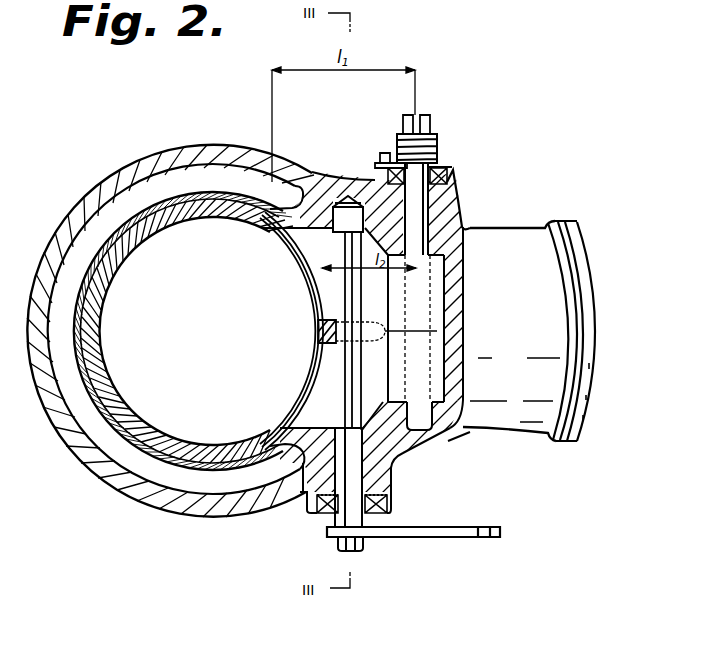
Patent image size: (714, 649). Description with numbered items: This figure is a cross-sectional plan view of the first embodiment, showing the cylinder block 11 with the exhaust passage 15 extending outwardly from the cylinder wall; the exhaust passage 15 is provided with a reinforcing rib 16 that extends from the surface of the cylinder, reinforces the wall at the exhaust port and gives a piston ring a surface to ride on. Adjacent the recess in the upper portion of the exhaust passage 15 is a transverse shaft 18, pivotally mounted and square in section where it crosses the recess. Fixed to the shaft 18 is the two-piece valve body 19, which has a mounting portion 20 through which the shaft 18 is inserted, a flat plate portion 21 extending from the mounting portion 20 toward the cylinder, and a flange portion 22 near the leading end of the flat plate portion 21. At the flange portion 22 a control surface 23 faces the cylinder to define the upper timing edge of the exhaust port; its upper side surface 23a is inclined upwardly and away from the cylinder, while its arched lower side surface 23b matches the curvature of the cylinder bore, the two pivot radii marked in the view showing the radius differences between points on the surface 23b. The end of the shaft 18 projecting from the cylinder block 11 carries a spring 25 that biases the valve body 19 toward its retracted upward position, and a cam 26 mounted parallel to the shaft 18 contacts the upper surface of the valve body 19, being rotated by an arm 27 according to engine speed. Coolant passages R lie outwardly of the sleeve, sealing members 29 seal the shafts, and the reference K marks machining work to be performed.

The cylinder block 11 is at (200, 147).
The coolant passages R is at (205, 500).
The exhaust passage 15 is at (573, 262).
The reinforcing rib 16 is at (318, 333).
The transverse shaft 18 is at (451, 180).
The valve body 19 is at (268, 423).
The mounting portion 20 is at (433, 367).
The flat plate portion 21 is at (383, 293).
The flange portion 22 is at (299, 246).
The control surface 23 is at (242, 240).
The upper side surface 23a is at (316, 278).
The lower side surface 23b is at (312, 256).
The spring 25 is at (437, 143).
The cam 26 is at (362, 462).
The arm 27 is at (458, 538).
The sealing members 29 is at (378, 162).
The machining work K is at (236, 233).